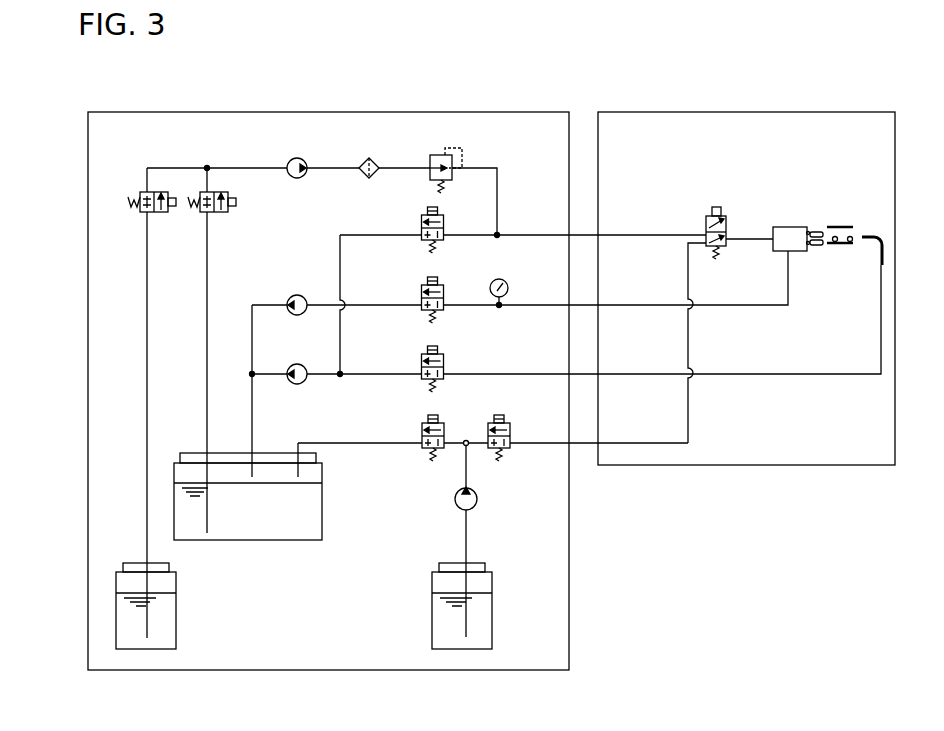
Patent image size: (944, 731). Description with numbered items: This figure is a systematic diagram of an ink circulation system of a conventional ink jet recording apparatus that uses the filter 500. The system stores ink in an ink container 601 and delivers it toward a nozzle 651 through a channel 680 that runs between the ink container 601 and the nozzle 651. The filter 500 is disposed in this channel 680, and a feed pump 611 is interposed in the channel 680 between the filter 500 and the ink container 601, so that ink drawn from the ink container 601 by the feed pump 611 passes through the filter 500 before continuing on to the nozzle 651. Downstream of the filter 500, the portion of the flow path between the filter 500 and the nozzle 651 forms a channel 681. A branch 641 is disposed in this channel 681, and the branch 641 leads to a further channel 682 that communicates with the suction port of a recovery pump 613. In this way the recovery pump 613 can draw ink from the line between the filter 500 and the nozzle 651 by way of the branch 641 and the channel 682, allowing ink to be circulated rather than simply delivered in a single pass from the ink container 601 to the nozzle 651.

The channel 680 is at (575, 235).
The feed pump 611 is at (288, 161).
The filter 500 is at (361, 161).
The channel 681 is at (407, 166).
The channel 682 is at (340, 266).
The recovery pump 613 is at (291, 363).
The branch 641 is at (497, 237).
The nozzle 651 is at (787, 227).
The ink container 601 is at (268, 541).